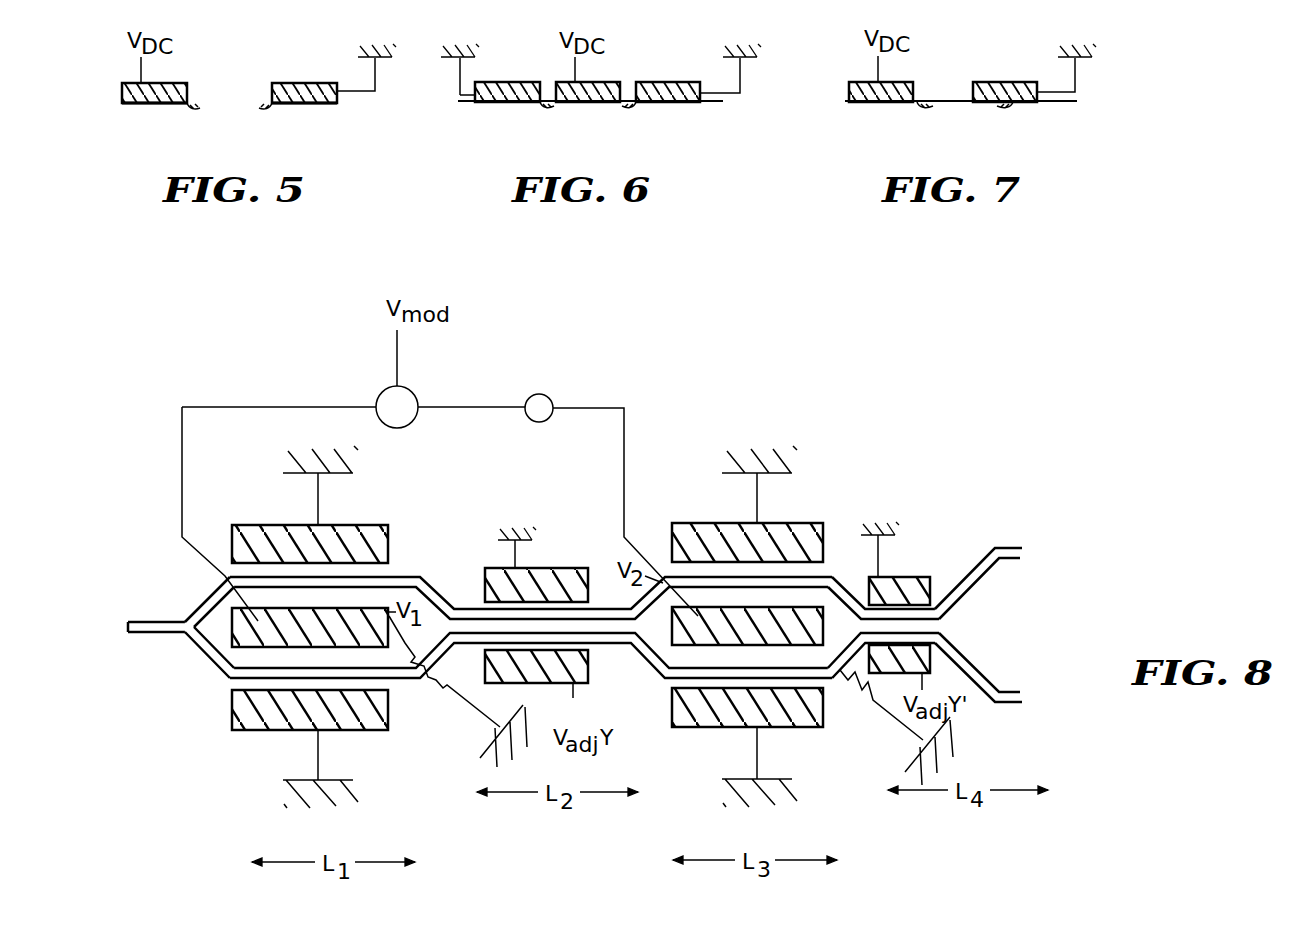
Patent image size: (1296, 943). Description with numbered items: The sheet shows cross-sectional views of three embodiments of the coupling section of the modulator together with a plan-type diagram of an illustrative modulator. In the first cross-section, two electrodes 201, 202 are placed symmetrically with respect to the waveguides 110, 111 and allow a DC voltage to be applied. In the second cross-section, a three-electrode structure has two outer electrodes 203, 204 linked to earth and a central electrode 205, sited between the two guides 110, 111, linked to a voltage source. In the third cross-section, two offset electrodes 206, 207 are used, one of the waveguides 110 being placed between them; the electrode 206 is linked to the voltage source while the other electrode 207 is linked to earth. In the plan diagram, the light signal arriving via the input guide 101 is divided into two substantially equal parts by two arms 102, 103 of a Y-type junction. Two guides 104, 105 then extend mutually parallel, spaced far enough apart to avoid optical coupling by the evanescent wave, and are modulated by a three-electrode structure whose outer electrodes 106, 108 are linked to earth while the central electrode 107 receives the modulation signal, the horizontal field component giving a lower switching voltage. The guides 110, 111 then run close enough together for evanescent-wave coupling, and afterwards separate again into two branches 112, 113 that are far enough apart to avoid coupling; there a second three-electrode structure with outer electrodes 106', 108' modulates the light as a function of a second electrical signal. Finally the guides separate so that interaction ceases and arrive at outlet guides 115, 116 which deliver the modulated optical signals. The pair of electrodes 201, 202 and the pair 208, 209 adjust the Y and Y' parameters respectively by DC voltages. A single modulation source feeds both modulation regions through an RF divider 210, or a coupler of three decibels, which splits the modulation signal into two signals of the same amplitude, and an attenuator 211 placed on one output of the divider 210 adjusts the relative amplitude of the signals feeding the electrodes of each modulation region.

In FIG. 8, the input guide 101 is at (171, 638).
In FIG. 8, the arm 102 is at (201, 613).
In FIG. 8, the arm 103 is at (231, 670).
In FIG. 8, the guide 104 is at (400, 581).
In FIG. 8, the guide 105 is at (405, 680).
In FIG. 8, the outer electrode 106 is at (318, 504).
In FIG. 8, the outer electrode 106' is at (763, 504).
In FIG. 8, the central electrode 107 is at (250, 638).
In FIG. 8, the outer electrode 108 is at (308, 749).
In FIG. 8, the outer electrode 108' is at (758, 747).
In FIG. 5, the waveguide 110 is at (200, 109).
In FIG. 6, the waveguide 110 is at (550, 107).
In FIG. 7, the waveguide 110 is at (925, 108).
In FIG. 5, the waveguide 111 is at (262, 109).
In FIG. 6, the waveguide 111 is at (636, 106).
In FIG. 7, the waveguide 111 is at (1005, 108).
In FIG. 8, the branch 112 is at (822, 582).
In FIG. 8, the branch 113 is at (673, 690).
In FIG. 8, the outlet guide 115 is at (991, 553).
In FIG. 8, the outlet guide 116 is at (998, 712).
In FIG. 5, the electrode 201 is at (148, 104).
In FIG. 8, the electrode 201 is at (540, 578).
In FIG. 5, the electrode 202 is at (318, 104).
In FIG. 8, the electrode 202 is at (577, 684).
In FIG. 6, the outer electrode 203 is at (500, 103).
In FIG. 6, the outer electrode 204 is at (695, 104).
In FIG. 6, the central electrode 205 is at (605, 103).
In FIG. 7, the offset electrode 206 is at (882, 103).
In FIG. 7, the offset electrode 207 is at (1040, 96).
In FIG. 8, the electrode 208 is at (914, 589).
In FIG. 8, the electrode 209 is at (932, 655).
In FIG. 8, the RF divider 210 is at (409, 396).
In FIG. 8, the attenuator 211 is at (549, 400).